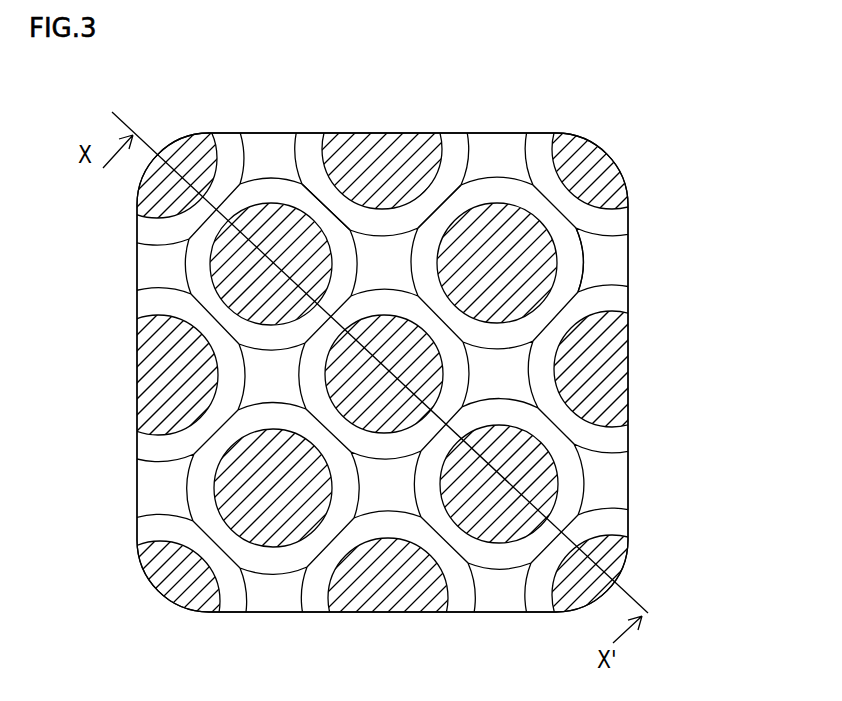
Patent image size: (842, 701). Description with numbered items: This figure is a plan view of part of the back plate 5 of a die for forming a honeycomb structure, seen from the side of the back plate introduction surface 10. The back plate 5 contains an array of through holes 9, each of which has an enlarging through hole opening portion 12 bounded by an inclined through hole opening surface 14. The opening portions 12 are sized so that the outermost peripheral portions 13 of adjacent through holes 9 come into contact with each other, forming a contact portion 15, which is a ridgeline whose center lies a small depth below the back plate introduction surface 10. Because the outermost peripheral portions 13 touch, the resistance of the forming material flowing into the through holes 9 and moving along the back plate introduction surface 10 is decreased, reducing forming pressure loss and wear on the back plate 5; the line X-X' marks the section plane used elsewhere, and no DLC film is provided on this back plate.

The back plate 5 is at (659, 102).
The through hole 9 is at (508, 213).
The back plate introduction surface 10 is at (606, 489).
The through hole opening portion 12 is at (450, 175).
The outermost peripheral portion 13 is at (583, 253).
The through hole opening surface 14 is at (268, 187).
The contact portion 15 is at (317, 200).